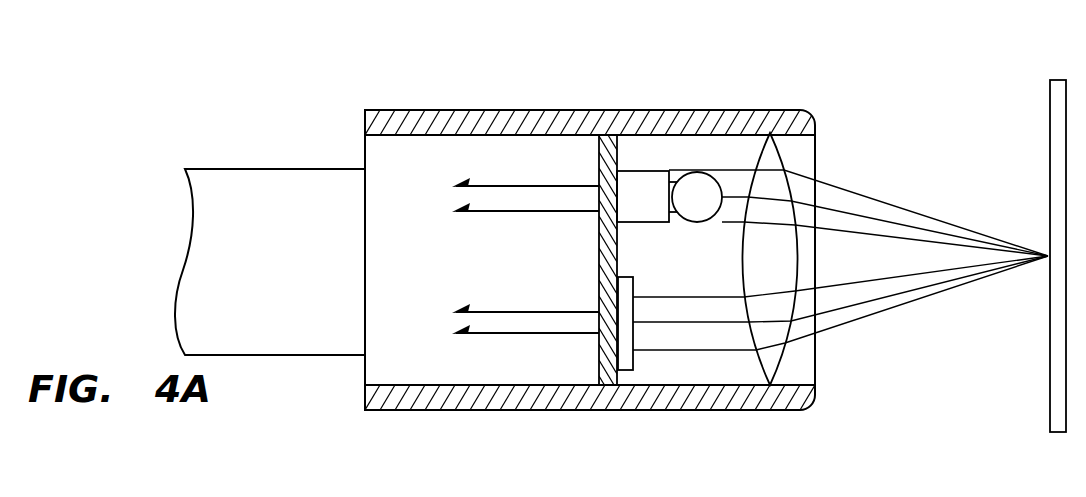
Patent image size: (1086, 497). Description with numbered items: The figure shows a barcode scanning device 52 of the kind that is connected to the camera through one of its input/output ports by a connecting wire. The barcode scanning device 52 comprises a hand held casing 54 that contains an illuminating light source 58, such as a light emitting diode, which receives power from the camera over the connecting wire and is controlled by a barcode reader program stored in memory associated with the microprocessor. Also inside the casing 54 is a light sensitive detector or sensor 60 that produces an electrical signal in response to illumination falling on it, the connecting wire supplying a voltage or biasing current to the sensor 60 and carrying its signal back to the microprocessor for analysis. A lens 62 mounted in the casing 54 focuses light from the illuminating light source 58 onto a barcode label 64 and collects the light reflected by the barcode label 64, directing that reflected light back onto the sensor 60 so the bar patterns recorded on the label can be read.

The barcode scanning device 52 is at (333, 102).
The hand held casing 54 is at (443, 124).
The illuminating light source 58 is at (698, 197).
The light sensitive detector or sensor 60 is at (627, 355).
The lens 62 is at (772, 155).
The barcode label 64 is at (1060, 100).